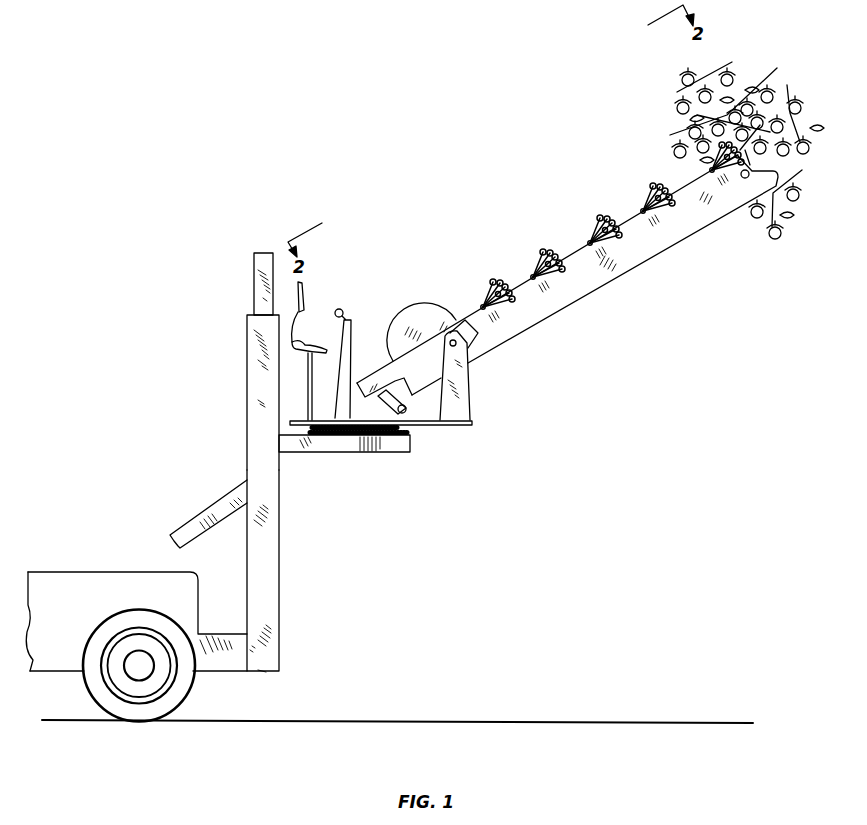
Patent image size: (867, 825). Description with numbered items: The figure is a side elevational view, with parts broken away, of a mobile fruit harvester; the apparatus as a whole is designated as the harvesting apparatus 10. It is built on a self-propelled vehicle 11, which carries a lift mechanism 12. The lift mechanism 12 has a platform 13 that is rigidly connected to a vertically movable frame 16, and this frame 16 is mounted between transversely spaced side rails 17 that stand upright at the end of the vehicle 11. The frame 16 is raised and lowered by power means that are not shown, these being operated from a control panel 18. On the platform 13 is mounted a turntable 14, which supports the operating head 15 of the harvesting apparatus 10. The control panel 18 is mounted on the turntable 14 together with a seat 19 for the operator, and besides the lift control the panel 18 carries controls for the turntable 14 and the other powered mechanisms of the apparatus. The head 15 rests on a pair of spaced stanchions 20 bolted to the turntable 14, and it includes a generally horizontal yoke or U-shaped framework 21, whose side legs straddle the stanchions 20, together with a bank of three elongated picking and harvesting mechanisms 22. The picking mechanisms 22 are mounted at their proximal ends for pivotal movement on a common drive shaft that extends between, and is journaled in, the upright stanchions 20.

The harvesting apparatus 10 is at (350, 543).
The self-propelled vehicle 11 is at (107, 572).
The lift mechanism 12 is at (279, 527).
The platform 13 is at (383, 452).
The turntable 14 is at (433, 425).
The operating head 15 is at (528, 372).
The vertically movable frame 16 is at (254, 286).
The side rails 17 is at (247, 403).
The control panel 18 is at (352, 322).
The seat 19 is at (303, 290).
The stanchions 20 is at (468, 400).
The yoke 21 is at (405, 364).
The picking and harvesting mechanisms 22 is at (563, 310).